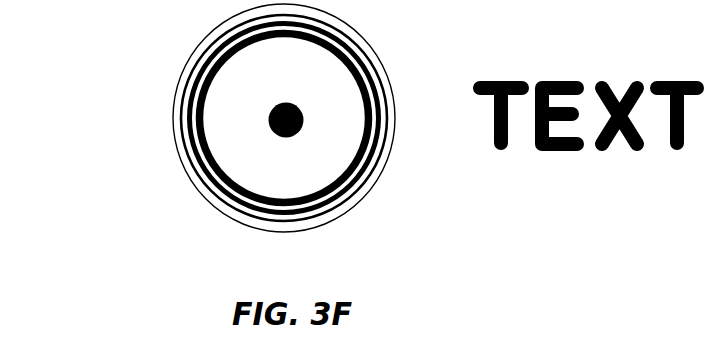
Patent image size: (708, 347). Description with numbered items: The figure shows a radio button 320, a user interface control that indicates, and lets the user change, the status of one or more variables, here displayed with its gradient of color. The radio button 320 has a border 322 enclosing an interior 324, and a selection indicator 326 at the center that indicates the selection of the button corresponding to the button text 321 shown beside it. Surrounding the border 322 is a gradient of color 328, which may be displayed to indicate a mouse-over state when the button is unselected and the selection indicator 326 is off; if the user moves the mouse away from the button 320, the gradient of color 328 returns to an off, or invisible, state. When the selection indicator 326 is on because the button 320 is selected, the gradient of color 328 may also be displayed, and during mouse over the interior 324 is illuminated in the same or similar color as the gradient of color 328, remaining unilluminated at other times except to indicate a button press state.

The radio button 320 is at (267, 250).
The button text 321 is at (595, 168).
The border 322 is at (228, 192).
The interior 324 is at (262, 153).
The selection indicator 326 is at (269, 118).
The gradient of color 328 is at (192, 71).